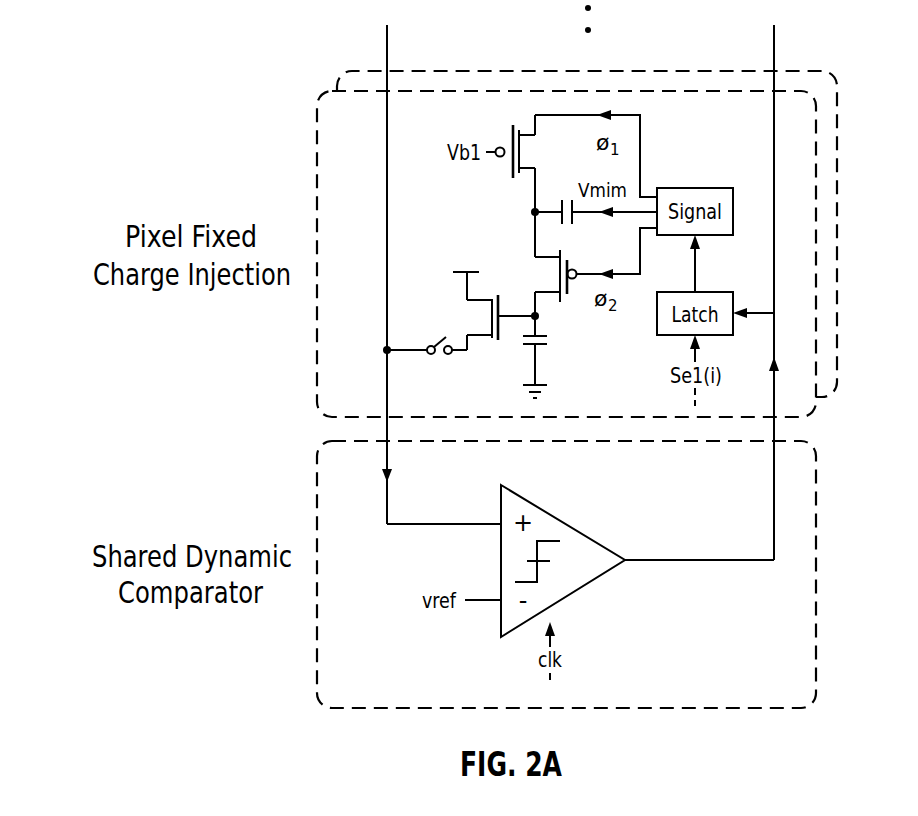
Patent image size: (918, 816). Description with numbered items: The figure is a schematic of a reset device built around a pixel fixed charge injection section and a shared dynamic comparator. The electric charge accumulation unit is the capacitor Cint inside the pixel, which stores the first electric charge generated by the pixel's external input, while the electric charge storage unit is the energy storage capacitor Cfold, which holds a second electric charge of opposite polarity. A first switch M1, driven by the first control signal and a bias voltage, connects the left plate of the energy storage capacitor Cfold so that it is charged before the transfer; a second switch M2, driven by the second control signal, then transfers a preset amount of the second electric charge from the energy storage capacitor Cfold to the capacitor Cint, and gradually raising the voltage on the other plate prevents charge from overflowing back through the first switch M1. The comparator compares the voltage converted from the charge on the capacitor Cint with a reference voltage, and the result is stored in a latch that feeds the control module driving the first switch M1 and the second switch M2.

The first switch M1 is at (520, 186).
The second switch M2 is at (551, 293).
The energy storage capacitor Cfold is at (594, 226).
The capacitor Cint is at (564, 365).